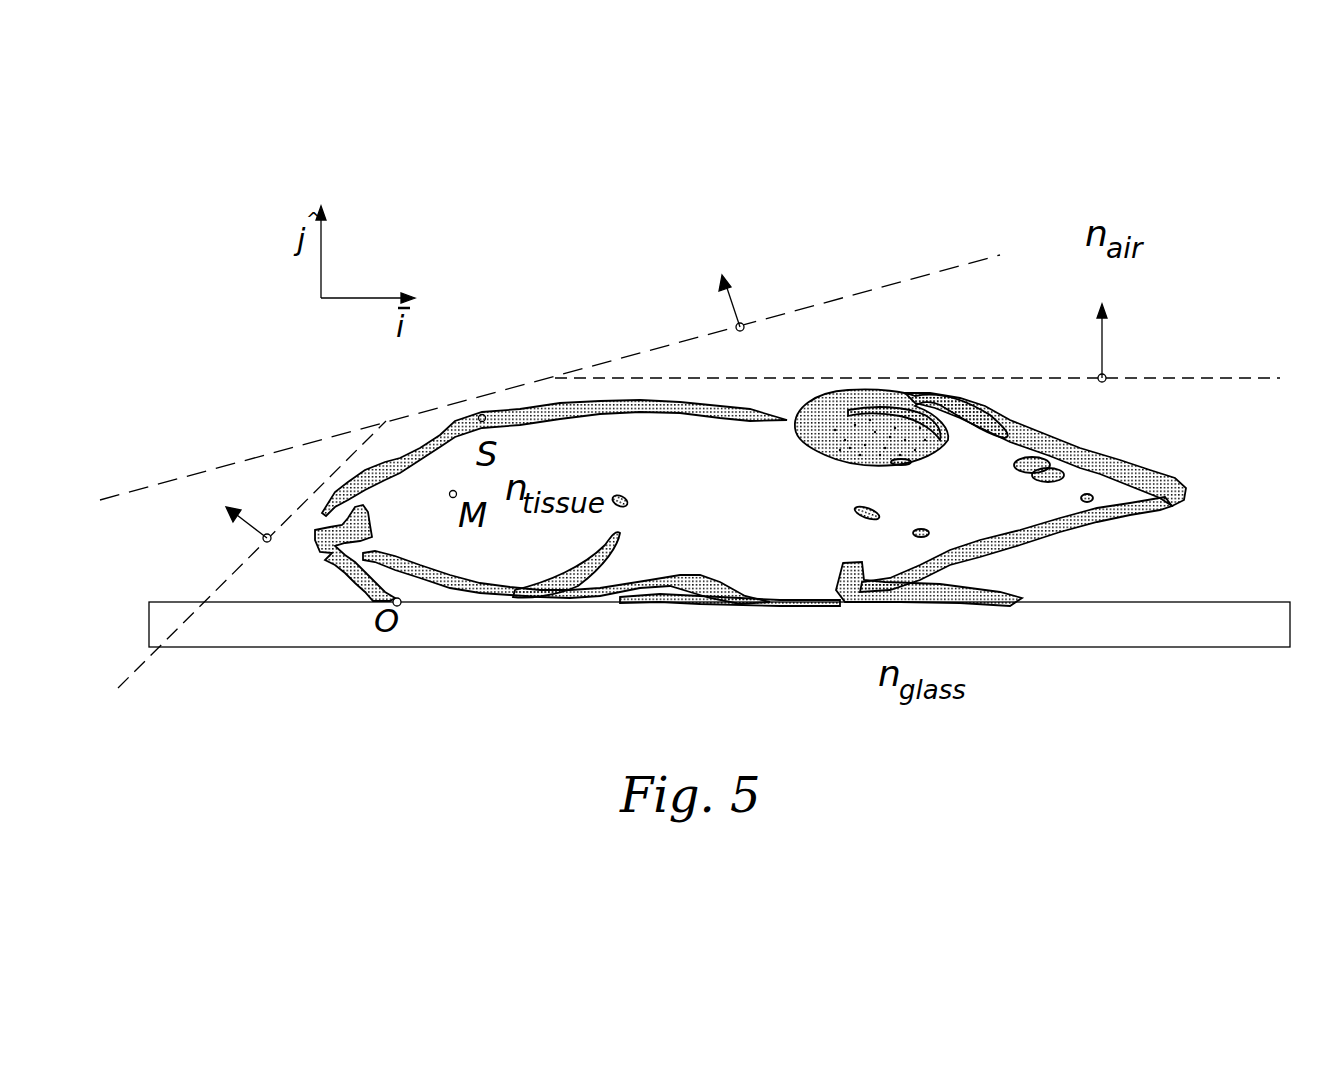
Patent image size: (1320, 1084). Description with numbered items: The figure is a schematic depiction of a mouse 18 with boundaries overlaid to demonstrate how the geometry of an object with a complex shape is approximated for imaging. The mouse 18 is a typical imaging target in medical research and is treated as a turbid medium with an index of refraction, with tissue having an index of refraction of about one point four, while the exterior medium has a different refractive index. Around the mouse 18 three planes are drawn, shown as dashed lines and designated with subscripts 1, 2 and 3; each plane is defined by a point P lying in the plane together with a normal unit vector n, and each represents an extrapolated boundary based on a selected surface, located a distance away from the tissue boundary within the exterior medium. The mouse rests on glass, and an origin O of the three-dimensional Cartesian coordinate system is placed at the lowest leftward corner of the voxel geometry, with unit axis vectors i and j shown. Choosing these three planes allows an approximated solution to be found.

The mouse 18 is at (1180, 478).
The first tangent plane π1 at point P1 with normal n1 1 is at (550, 369).
The second tangent plane π2 at point P2 with normal n2 2 is at (917, 362).
The third tangent plane π3 at point P3 with normal n3 3 is at (235, 554).